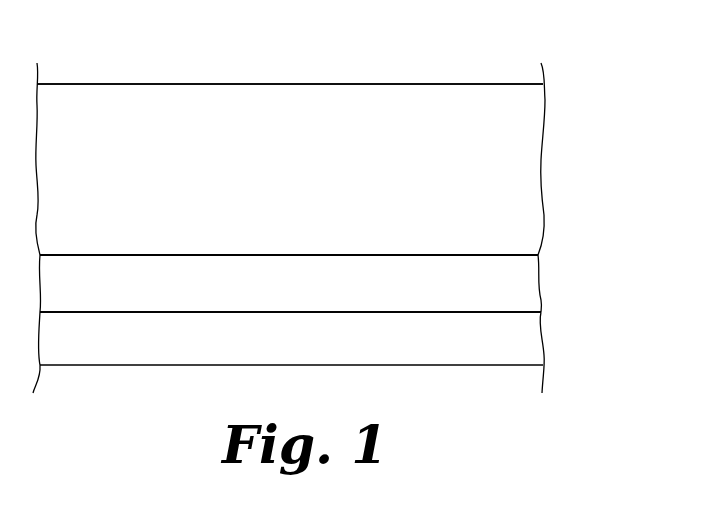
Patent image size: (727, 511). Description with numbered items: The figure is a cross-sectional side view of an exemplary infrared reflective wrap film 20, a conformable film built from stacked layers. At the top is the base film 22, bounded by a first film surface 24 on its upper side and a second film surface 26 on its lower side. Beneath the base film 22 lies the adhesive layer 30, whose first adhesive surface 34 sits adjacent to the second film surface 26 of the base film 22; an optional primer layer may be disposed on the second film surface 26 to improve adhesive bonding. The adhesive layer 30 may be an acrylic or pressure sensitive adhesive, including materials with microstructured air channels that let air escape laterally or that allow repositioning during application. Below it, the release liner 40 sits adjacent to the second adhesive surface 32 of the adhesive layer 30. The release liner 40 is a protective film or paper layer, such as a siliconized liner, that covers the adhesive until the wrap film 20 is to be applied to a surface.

The infrared reflective wrap film 20 is at (592, 50).
The base film 22 is at (522, 173).
The first film surface 24 is at (140, 83).
The second film surface 26 is at (148, 254).
The adhesive layer 30 is at (528, 287).
The second adhesive surface 32 is at (258, 312).
The first adhesive surface 34 is at (258, 257).
The release liner 40 is at (532, 343).